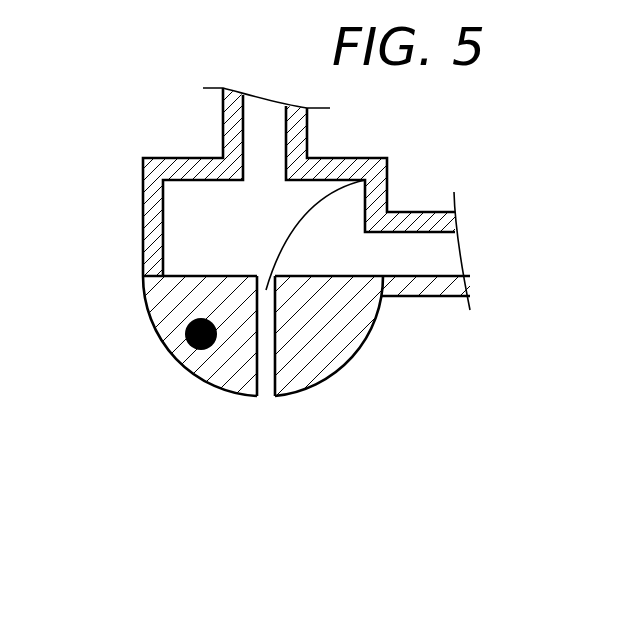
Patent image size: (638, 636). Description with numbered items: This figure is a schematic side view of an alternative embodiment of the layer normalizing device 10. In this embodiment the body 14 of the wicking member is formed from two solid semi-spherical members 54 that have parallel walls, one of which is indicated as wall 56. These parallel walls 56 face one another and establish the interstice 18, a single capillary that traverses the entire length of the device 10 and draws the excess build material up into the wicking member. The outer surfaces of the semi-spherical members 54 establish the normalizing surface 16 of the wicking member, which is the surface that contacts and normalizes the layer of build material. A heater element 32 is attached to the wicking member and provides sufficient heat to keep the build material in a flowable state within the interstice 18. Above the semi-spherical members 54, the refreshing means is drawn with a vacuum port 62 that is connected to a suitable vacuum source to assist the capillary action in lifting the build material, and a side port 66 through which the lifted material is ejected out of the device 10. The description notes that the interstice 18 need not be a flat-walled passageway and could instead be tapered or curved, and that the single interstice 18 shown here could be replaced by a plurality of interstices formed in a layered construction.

The layer normalizing device 10 is at (108, 164).
The body 14 is at (227, 360).
The normalizing surface 16 is at (220, 398).
The interstice 18 is at (268, 393).
The heater element 32 is at (183, 332).
The semi-spherical members 54 is at (222, 291).
The parallel walls 56 is at (365, 180).
The vacuum port 62 is at (271, 117).
The port 66 is at (430, 255).